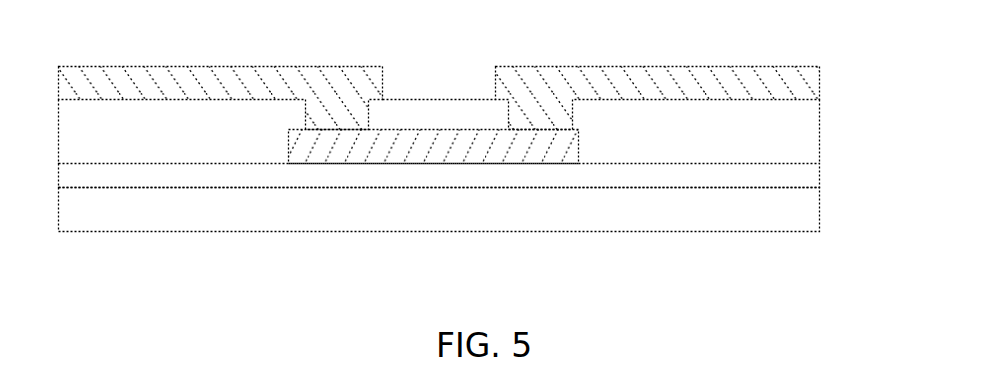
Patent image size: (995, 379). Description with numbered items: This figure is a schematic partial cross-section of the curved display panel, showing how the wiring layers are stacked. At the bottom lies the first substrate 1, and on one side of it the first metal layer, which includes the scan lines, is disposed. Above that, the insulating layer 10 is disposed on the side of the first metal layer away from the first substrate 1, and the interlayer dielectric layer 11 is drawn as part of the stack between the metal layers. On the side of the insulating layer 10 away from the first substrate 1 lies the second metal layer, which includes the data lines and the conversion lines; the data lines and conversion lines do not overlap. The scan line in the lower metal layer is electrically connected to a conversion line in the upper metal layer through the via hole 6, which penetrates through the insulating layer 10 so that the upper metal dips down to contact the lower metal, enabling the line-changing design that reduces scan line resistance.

The first substrate 1 is at (787, 210).
The insulating layer 10 is at (790, 177).
The interlayer dielectric layer 11 is at (785, 137).
The via hole 6 is at (309, 106).